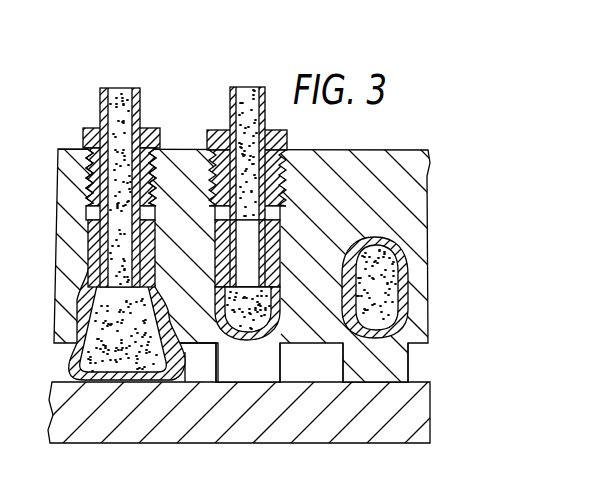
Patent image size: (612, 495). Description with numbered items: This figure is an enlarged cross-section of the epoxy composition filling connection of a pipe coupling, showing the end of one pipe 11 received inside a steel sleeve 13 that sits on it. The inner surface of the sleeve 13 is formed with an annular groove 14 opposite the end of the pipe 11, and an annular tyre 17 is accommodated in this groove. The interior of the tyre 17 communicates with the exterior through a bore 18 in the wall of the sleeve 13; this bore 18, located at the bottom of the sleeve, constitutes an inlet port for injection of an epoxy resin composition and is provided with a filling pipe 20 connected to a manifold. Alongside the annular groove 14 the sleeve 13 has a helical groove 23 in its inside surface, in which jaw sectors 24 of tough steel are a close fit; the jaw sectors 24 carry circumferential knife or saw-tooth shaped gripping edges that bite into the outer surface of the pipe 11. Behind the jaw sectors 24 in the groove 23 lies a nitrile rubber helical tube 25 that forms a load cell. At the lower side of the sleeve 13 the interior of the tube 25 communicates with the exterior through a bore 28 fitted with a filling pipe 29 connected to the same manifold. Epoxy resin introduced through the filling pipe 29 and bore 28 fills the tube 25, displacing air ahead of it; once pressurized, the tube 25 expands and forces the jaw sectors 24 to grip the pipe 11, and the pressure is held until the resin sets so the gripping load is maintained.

The pipe 11 is at (303, 428).
The sleeve 13 is at (393, 157).
The annular groove 14 is at (162, 283).
The annular tyre 17 is at (178, 342).
The bore 18 is at (156, 161).
The filling pipe 20 is at (101, 115).
The helical groove 23 is at (400, 257).
The jaw sector 24 is at (348, 357).
The helical tube 25 is at (281, 291).
The bore 28 is at (279, 291).
The filling pipe 29 is at (230, 108).